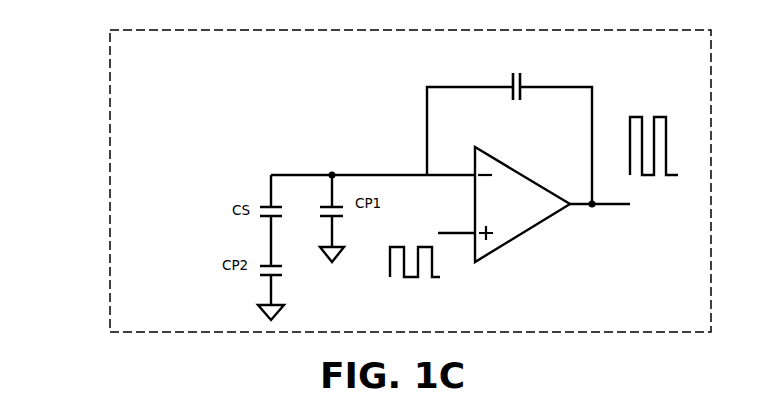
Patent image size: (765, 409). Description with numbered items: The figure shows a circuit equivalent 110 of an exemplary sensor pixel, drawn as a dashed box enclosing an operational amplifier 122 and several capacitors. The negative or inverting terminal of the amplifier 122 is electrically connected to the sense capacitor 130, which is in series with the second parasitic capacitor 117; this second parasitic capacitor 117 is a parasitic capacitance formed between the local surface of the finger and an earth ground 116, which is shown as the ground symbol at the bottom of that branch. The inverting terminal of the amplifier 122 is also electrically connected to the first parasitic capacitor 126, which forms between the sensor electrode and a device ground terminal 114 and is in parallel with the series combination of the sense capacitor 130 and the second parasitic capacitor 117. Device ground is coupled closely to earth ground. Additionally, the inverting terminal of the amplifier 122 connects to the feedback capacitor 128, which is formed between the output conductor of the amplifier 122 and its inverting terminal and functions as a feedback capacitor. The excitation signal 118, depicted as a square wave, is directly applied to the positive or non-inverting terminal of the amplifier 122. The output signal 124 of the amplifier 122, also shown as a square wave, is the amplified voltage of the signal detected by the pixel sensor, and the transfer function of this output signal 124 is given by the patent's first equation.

The circuit equivalent 110 is at (110, 84).
The capacitor CS 130 is at (270, 204).
The parasitic capacitor CP1 126 is at (328, 212).
The parasitic capacitor CP2 117 is at (262, 276).
The device ground terminal 114 is at (333, 255).
The earth ground 116 is at (282, 310).
The capacitor CF 128 is at (522, 80).
The operational amplifier 122 is at (515, 173).
The excitation signal Vin 118 is at (455, 235).
The output signal 124 is at (607, 206).